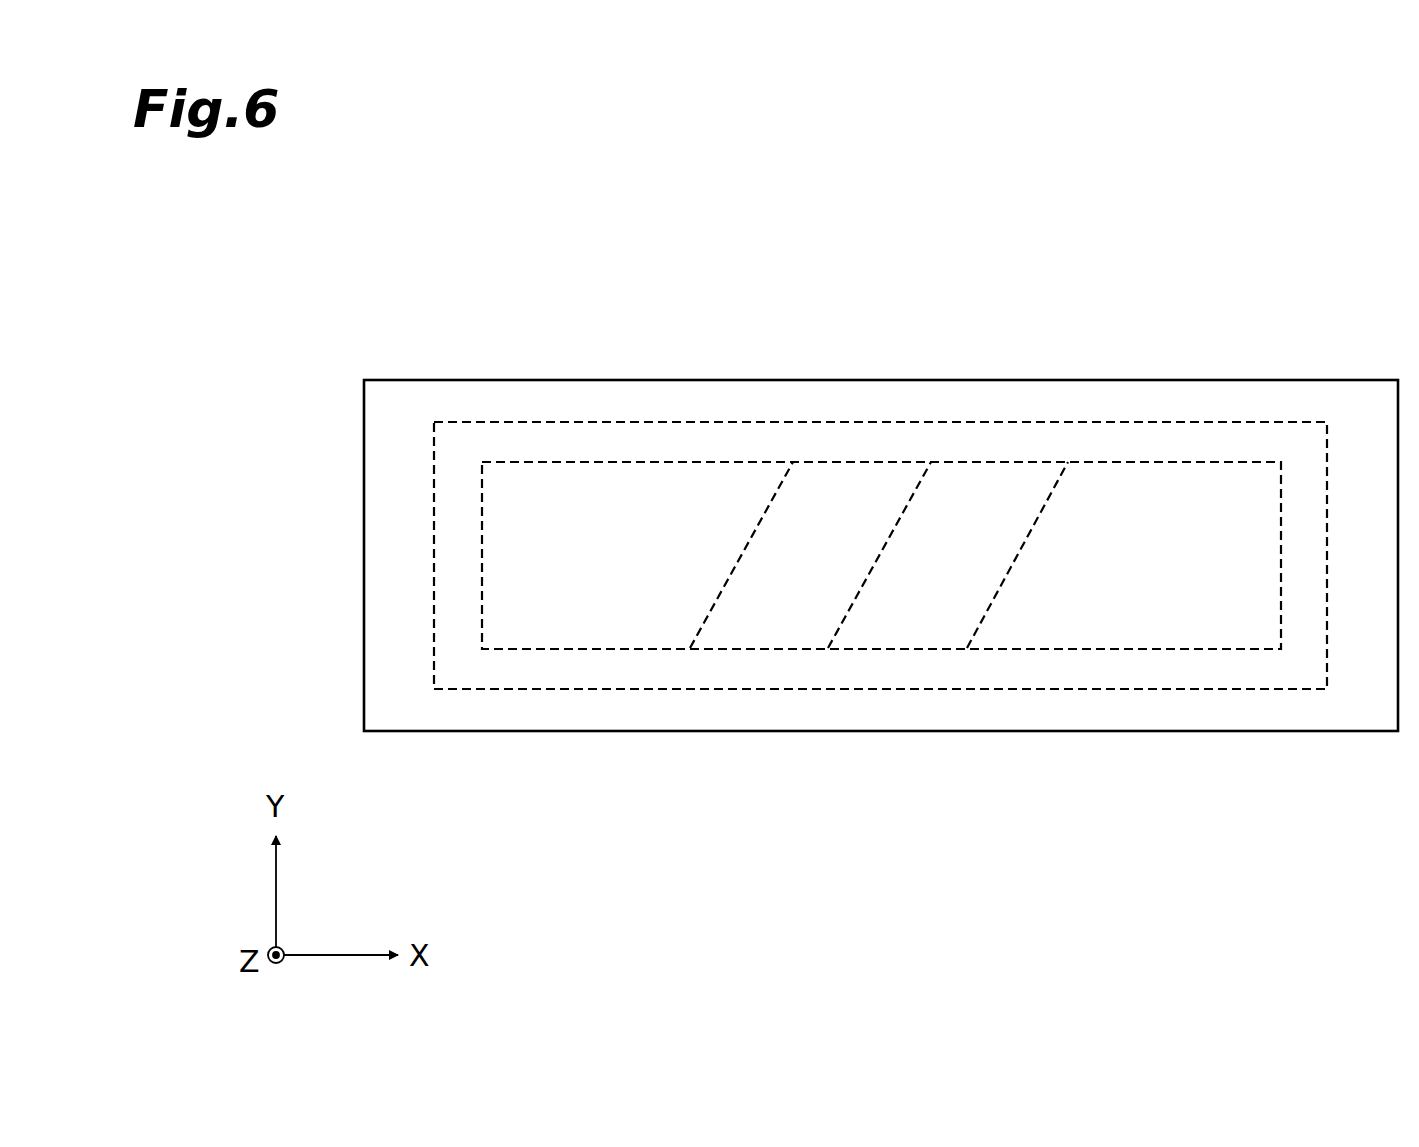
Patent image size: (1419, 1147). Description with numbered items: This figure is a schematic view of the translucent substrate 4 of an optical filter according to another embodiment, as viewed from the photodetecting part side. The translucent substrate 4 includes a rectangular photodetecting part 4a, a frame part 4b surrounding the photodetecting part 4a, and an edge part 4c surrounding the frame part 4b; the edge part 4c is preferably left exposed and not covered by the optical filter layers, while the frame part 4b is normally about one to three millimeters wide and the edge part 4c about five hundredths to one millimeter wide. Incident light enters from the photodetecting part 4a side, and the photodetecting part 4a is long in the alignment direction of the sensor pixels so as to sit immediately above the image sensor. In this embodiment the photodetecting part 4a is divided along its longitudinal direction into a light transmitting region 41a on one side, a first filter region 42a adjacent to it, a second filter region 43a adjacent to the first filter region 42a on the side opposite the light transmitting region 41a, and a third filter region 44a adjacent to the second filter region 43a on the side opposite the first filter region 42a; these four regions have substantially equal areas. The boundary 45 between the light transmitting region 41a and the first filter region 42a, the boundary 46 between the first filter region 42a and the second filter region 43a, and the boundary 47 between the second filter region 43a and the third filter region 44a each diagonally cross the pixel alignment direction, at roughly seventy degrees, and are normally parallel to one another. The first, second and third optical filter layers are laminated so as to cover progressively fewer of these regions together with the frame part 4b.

The translucent substrate 4 is at (881, 470).
The photodetecting part 4a is at (1163, 460).
The frame part 4b is at (1037, 443).
The edge part 4c is at (918, 405).
The light transmitting region 41a is at (1140, 597).
The first filter region 42a is at (930, 597).
The second filter region 43a is at (782, 602).
The third filter region 44a is at (597, 615).
The boundary 45 is at (992, 603).
The boundary 46 is at (858, 600).
The boundary 47 is at (717, 603).